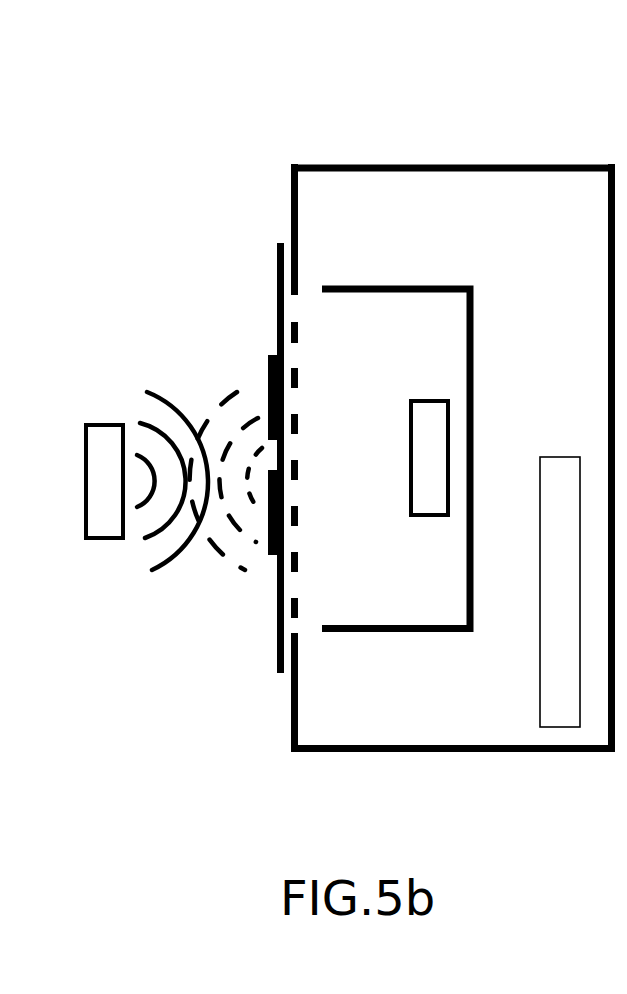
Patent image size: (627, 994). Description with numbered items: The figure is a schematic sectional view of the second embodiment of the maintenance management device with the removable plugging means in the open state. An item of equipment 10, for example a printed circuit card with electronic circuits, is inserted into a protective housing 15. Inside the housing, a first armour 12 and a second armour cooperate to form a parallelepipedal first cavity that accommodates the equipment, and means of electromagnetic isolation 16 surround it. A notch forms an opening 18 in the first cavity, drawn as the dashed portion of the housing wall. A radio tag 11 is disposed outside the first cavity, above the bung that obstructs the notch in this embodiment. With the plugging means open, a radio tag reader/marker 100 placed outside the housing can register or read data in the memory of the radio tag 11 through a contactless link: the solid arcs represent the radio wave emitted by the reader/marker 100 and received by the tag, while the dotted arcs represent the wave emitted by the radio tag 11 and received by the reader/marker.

The protective housing 15 is at (475, 166).
The opening 18 is at (303, 536).
The means of electromagnetic isolation 16 is at (473, 325).
The first armour 12 is at (427, 433).
The item of equipment 10 is at (570, 690).
The radio tag 11 is at (268, 403).
The radio tag reader/marker 100 is at (105, 520).